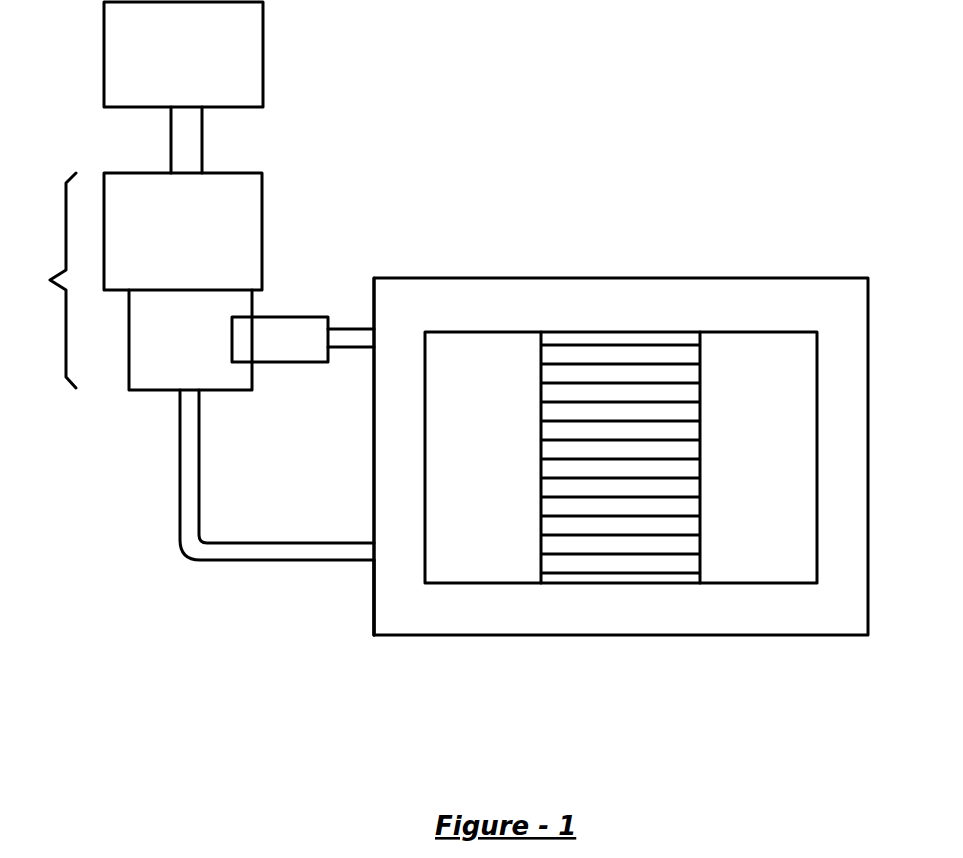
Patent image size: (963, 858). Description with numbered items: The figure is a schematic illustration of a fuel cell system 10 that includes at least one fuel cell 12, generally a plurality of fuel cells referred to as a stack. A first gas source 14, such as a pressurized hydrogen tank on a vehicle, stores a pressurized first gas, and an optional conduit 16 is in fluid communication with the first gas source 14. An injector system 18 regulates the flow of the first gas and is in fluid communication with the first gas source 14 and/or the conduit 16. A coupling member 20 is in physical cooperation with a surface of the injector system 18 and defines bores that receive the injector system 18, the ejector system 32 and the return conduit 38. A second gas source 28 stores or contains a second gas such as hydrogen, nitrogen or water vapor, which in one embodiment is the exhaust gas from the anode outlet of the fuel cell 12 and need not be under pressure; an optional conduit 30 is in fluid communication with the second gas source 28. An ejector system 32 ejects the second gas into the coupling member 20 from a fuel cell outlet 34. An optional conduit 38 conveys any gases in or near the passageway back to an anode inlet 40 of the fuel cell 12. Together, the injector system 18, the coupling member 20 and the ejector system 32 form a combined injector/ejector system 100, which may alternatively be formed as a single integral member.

The fuel cell system 10 is at (778, 257).
The fuel cell 12 is at (817, 415).
The first gas source 14 is at (194, 63).
The conduit 16 is at (203, 136).
The injector system 18 is at (184, 240).
The coupling member 20 is at (196, 353).
The second gas source 28 is at (465, 302).
The conduit 30 is at (352, 328).
The ejector system 32 is at (280, 363).
The fuel cell outlet 34 is at (380, 341).
The conduit 38 is at (207, 561).
The anode inlet 40 is at (381, 553).
The combined injector/ejector system 100 is at (45, 280).